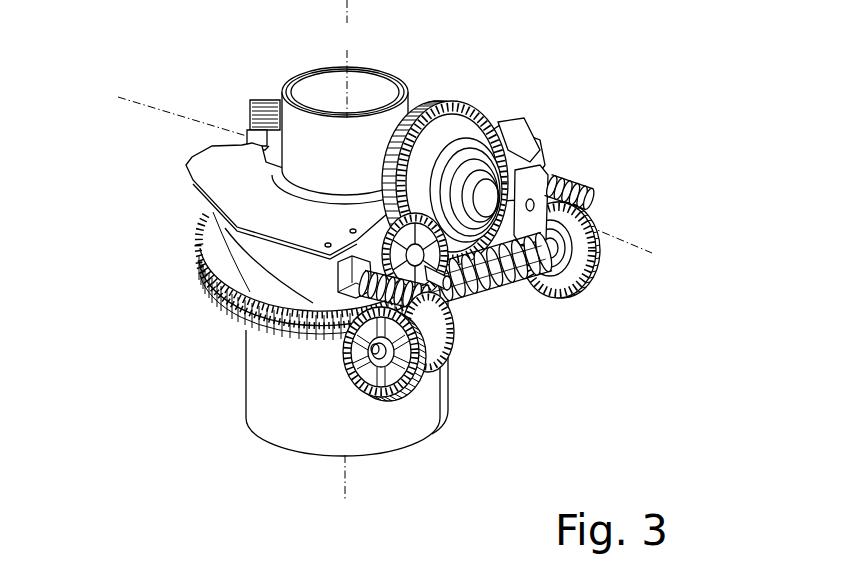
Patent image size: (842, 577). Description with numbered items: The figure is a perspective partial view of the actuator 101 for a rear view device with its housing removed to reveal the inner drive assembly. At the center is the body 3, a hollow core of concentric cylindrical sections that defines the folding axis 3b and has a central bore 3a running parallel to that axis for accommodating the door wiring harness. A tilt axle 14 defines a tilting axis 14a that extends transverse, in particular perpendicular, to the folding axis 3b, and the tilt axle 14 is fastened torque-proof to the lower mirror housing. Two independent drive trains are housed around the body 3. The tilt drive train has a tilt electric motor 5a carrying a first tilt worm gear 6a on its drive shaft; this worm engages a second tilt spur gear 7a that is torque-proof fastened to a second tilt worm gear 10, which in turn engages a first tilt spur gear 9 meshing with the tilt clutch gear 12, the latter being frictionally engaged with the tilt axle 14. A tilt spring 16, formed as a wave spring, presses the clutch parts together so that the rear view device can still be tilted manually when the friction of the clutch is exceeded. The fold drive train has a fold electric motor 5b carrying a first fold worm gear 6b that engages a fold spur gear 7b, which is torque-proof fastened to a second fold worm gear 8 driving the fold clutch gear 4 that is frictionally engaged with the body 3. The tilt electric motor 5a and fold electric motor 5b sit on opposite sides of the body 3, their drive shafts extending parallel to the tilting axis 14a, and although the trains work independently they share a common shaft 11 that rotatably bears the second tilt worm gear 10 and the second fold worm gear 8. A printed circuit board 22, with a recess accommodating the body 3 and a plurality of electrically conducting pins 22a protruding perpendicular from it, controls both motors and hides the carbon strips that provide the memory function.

The actuator 101 is at (630, 108).
The body 3 is at (367, 455).
The central bore 3a is at (368, 105).
The folding axis 3b is at (347, 63).
The fold clutch gear 4 is at (200, 252).
The tilt electric motor 5a is at (225, 330).
The fold electric motor 5b is at (540, 145).
The first tilt worm gear 6a is at (432, 348).
The first fold worm gear 6b is at (588, 195).
The second tilt spur gear 7a is at (410, 390).
The fold spur gear 7b is at (598, 278).
The second fold worm gear 8 is at (520, 298).
The first tilt spur gear 9 is at (455, 300).
The second tilt worm gear 10 is at (443, 312).
The common shaft 11 is at (393, 385).
The tilt clutch gear 12 is at (458, 99).
The tilt axle 14 is at (533, 176).
The tilting axis 14a is at (650, 252).
The tilt spring 16 is at (492, 287).
The printed circuit board 22 is at (183, 165).
The electrically conducting pins 22a is at (250, 116).